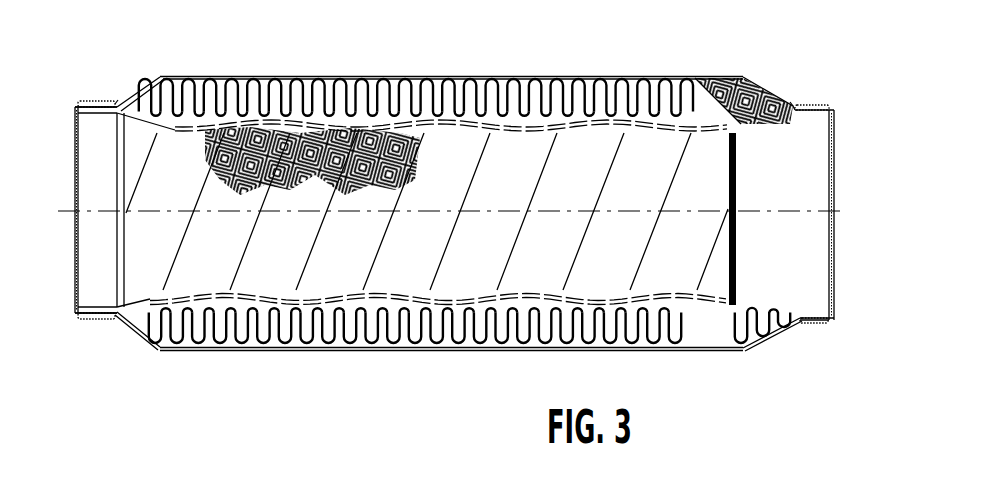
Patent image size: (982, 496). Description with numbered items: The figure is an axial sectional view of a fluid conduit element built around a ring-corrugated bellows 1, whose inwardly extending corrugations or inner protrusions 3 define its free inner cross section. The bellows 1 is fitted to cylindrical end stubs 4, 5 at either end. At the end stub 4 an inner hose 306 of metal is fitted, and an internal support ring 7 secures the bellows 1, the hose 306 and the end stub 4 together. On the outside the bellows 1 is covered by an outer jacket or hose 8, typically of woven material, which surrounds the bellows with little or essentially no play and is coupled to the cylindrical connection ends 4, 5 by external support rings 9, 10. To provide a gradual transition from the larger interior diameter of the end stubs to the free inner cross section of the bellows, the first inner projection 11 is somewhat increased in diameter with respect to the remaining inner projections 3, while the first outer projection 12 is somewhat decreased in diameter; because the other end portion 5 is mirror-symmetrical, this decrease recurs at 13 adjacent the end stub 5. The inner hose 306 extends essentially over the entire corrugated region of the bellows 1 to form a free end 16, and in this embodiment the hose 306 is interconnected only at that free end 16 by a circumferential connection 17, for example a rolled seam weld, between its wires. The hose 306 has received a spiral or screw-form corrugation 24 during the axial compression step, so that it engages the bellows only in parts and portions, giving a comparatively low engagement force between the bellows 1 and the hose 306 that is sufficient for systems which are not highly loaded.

The ring-corrugated bellows 1 is at (385, 93).
The inner protrusions 3 is at (264, 108).
The cylindrical end stub 4 is at (75, 113).
The cylindrical end stub 5 is at (806, 318).
The internal support ring 7 is at (97, 270).
The outer jacket or hose 8 is at (748, 95).
The external support ring 9 is at (96, 101).
The external support ring 10 is at (812, 104).
The first inner projection 11 is at (119, 108).
The first outer projection 12 is at (150, 335).
The decreased-diameter outer projection 13 is at (758, 336).
The free end 16 is at (699, 167).
The circumferential connection 17 is at (735, 247).
The spiral corrugation 24 is at (388, 245).
The hose 306 is at (453, 158).